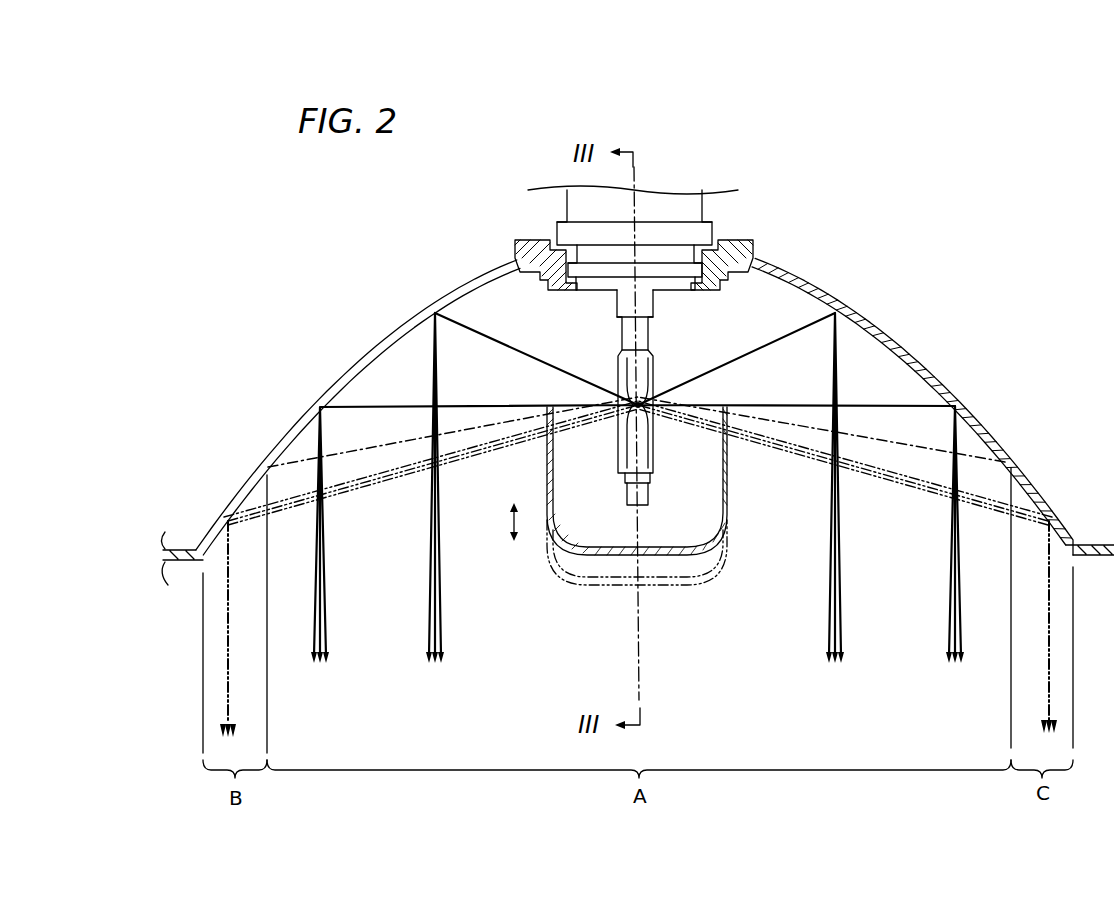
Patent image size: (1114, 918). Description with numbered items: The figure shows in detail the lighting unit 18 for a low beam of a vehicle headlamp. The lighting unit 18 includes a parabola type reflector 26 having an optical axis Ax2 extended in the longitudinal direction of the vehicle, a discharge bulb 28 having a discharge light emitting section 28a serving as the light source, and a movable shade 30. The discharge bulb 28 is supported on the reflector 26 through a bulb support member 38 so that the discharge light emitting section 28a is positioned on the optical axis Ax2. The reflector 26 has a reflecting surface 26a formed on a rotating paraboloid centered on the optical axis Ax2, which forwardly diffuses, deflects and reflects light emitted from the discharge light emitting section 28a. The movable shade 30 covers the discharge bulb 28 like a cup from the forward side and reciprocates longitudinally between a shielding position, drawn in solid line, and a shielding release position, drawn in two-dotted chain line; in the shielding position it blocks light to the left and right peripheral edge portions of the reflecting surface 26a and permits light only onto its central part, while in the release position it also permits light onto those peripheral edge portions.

The lighting unit for a low beam 18 is at (357, 305).
The reflector 26 is at (922, 353).
The reflecting surface 26a is at (412, 333).
The discharge bulb 28 is at (699, 462).
The discharge light emitting section 28a is at (645, 400).
The movable shade 30 is at (690, 582).
The bulb support member 38 is at (745, 233).
The optical axis Ax2 is at (640, 637).